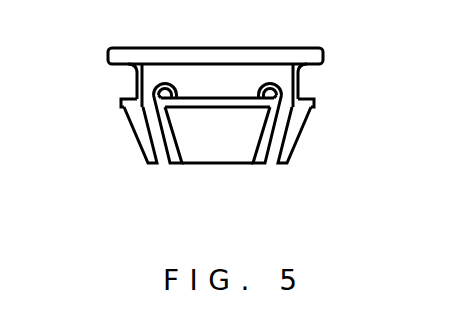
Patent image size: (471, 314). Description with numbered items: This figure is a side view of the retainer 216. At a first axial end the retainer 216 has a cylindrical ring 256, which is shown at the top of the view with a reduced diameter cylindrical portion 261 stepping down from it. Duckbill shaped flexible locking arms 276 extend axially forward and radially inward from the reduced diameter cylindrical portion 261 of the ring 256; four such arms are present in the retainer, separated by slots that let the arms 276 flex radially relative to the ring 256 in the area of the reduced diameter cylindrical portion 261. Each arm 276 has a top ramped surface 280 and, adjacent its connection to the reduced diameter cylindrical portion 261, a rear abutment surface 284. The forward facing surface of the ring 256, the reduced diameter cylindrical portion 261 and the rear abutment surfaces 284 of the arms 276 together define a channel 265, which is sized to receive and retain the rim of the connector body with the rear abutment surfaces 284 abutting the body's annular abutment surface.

The retainer 216 is at (210, 125).
The cylindrical ring 256 is at (108, 63).
The reduced diameter cylindrical portion 261 is at (150, 80).
The channel 265 is at (298, 81).
The duckbill shaped flexible locking arm 276 is at (135, 133).
The top ramped surface 280 is at (293, 152).
The rear abutment surface 284 is at (310, 93).